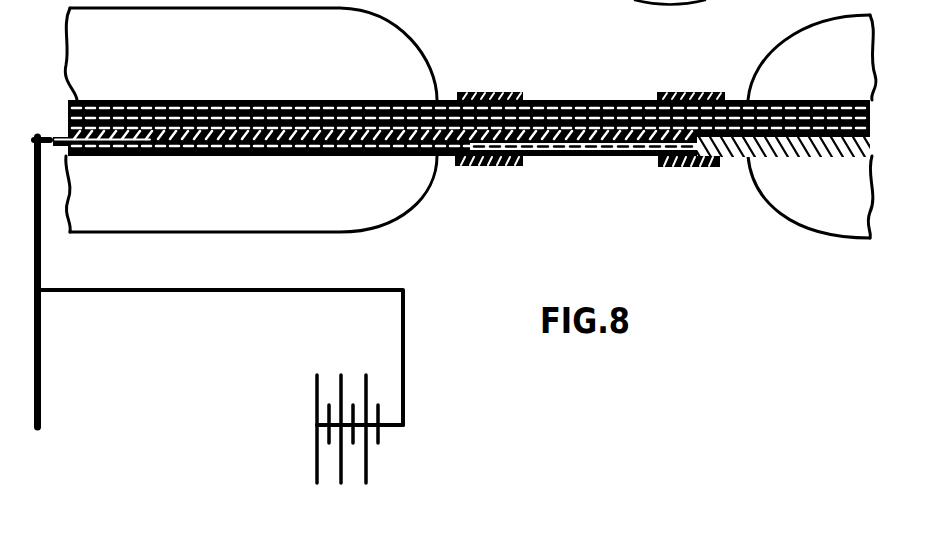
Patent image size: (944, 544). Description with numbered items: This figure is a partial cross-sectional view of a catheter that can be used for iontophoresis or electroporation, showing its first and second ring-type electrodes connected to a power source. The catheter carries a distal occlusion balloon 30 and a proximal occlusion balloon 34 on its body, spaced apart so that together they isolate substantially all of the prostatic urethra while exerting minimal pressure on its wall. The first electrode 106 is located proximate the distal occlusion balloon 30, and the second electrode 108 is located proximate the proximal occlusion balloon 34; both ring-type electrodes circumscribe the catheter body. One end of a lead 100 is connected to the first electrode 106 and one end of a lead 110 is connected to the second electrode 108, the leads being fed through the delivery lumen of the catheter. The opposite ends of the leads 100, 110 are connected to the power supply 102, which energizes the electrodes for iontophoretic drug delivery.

The distal occlusion balloon 30 is at (812, 35).
The proximal occlusion balloon 34 is at (388, 24).
The lead 100 is at (50, 344).
The power supply 102 is at (317, 466).
The first electrode 106 is at (690, 167).
The second electrode 108 is at (490, 165).
The lead 110 is at (272, 290).